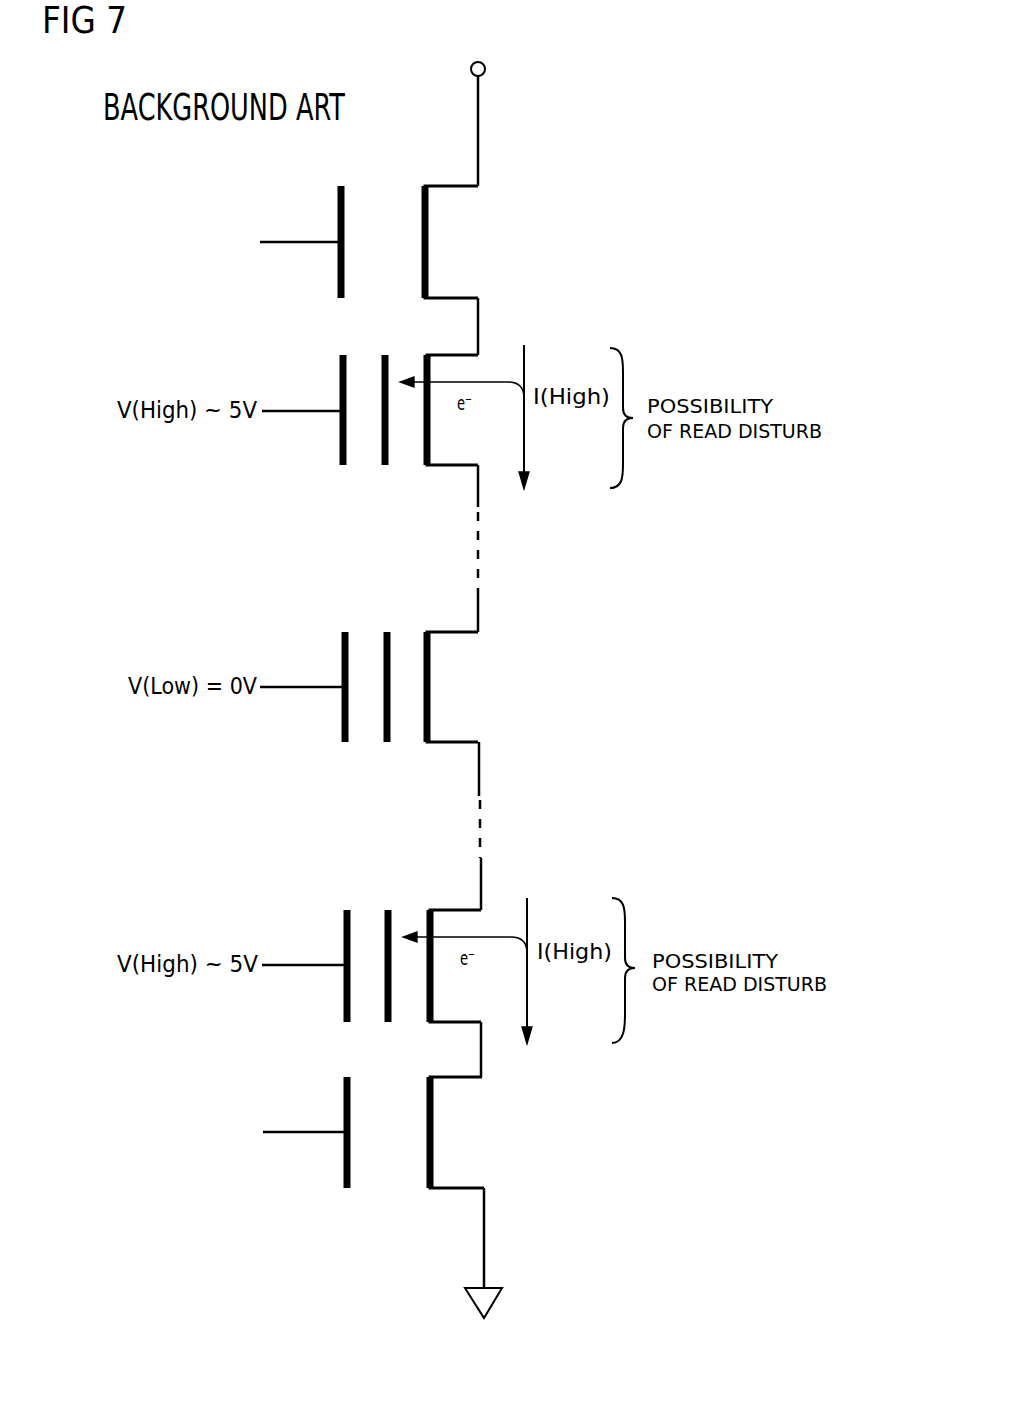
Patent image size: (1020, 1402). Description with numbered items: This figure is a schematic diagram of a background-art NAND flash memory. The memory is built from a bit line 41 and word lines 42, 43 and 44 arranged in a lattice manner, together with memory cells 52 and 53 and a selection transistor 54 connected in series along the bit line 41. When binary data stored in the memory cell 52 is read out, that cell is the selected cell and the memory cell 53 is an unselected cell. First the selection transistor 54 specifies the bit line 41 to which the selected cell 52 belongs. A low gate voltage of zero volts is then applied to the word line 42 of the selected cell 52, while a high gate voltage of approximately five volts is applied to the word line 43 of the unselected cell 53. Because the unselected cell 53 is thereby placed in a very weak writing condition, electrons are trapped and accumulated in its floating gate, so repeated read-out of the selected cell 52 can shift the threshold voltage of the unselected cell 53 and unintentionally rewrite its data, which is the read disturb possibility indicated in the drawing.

The bit line 41 is at (478, 137).
The word line 42 is at (292, 687).
The word line 43 is at (294, 411).
The word line 44 is at (280, 243).
The memory cell 52 is at (343, 645).
The memory cell 53 is at (341, 372).
The selection transistor 54 is at (337, 205).